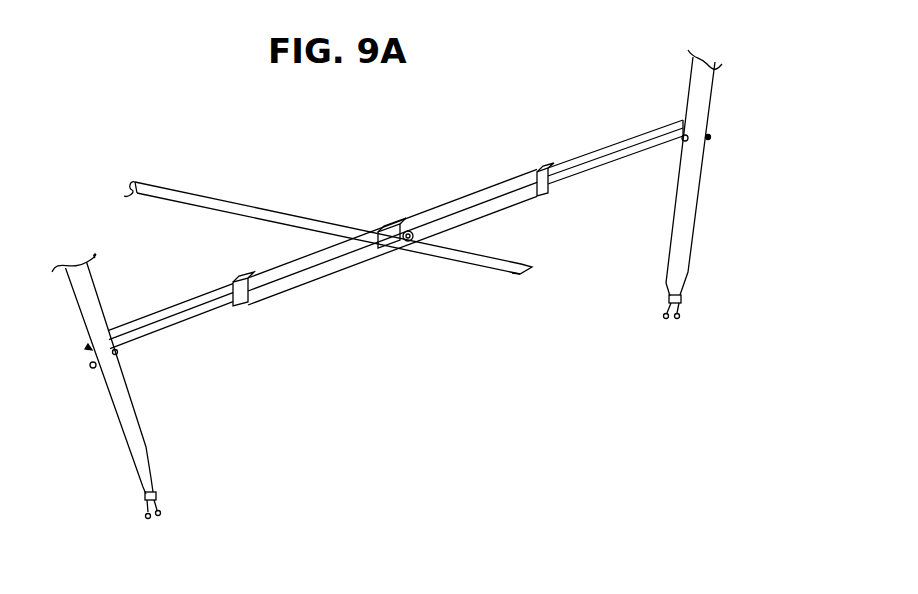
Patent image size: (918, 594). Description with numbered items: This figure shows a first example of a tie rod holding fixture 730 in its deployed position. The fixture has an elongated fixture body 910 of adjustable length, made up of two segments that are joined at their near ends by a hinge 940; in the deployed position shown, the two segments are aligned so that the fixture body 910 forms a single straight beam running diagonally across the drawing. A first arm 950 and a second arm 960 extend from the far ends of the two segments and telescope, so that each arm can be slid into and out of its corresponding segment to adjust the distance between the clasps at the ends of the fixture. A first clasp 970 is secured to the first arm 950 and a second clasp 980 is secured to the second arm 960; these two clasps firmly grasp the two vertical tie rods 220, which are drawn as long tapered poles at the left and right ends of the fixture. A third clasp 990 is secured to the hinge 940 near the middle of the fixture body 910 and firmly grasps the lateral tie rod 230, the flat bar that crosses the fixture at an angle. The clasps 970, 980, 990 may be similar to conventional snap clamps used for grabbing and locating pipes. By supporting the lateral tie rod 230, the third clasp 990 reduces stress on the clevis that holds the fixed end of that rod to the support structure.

The tie rod holding fixture 730 is at (468, 122).
The vertical tie rods 220 is at (87, 273).
The lateral tie rod 230 is at (172, 188).
The fixture body 910 is at (521, 200).
The hinge 940 is at (383, 222).
The first arm 950 is at (633, 137).
The second arm 960 is at (183, 318).
The first clasp 970 is at (710, 139).
The second clasp 980 is at (91, 366).
The third clasp 990 is at (413, 236).